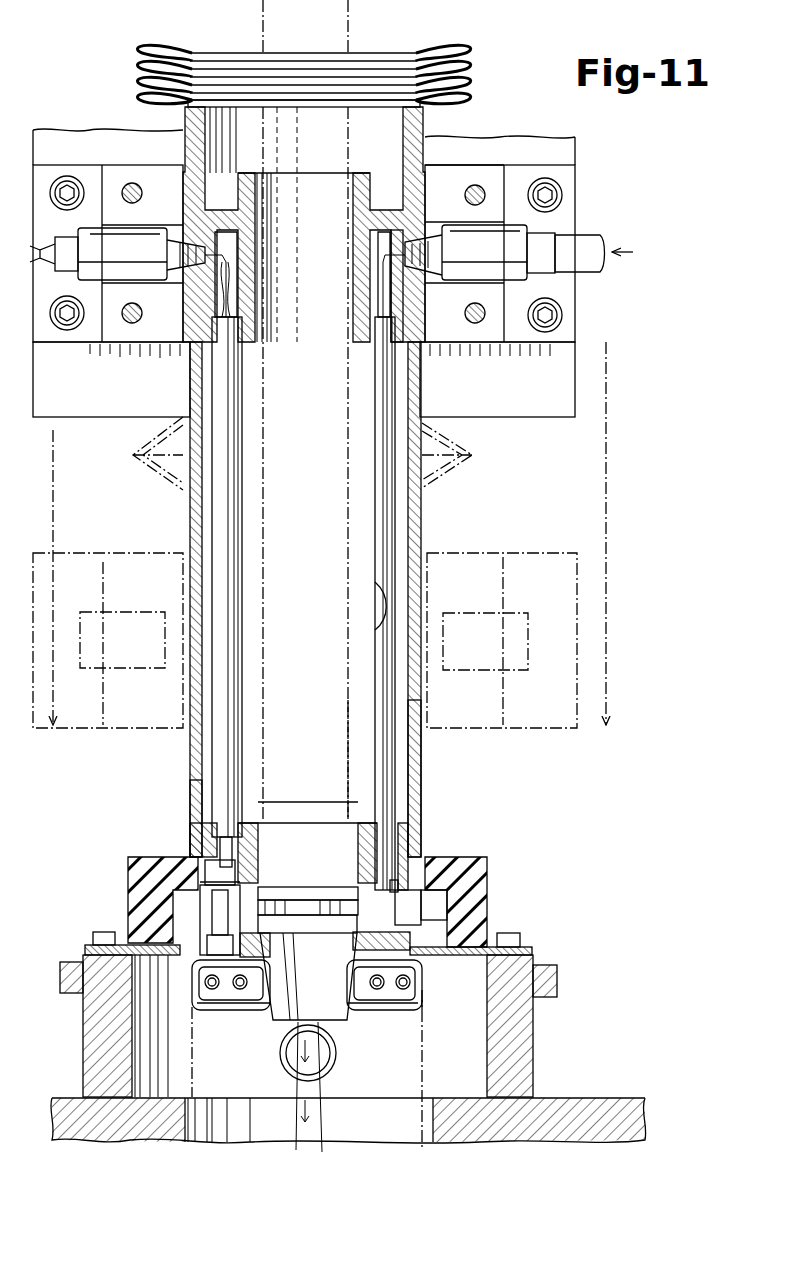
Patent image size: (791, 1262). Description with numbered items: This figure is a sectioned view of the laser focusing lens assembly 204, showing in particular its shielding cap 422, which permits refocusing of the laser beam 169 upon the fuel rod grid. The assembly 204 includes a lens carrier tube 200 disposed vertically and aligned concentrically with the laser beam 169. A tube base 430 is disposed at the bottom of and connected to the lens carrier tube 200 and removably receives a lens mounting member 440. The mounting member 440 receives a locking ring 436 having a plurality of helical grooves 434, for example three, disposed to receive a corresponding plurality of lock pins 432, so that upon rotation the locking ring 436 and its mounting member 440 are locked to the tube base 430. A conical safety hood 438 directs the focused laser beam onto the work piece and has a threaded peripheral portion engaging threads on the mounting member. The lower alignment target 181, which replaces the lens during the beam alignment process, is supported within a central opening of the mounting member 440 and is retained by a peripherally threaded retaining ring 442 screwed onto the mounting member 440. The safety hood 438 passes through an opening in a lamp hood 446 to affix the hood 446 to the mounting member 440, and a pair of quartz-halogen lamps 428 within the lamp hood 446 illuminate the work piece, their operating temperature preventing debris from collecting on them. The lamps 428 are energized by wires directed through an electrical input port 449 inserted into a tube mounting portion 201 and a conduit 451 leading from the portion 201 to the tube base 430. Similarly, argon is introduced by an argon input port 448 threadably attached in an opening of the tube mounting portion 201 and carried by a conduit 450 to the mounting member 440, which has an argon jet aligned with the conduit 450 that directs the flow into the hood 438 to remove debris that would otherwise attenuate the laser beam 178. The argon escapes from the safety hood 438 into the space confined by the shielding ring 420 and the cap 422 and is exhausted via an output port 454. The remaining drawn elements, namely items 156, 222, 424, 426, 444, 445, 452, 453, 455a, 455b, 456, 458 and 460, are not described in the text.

The base plate 156 is at (550, 1105).
The laser beam 169 is at (265, 650).
The laser beam 178 is at (352, 780).
The lower alignment target 181 is at (287, 910).
The lens carrier tube 200 is at (417, 511).
The tube mounting portion 201 is at (417, 318).
The laser focusing lens assembly 204 is at (425, 748).
The mounting block 222 is at (577, 182).
The shielding ring 420 is at (487, 860).
The shielding cap 422 is at (128, 916).
The retainer 424 is at (410, 848).
The base opening 426 is at (427, 1103).
The quartz-halogen lamps 428 is at (415, 1005).
The tube base 430 is at (200, 832).
The lock pins 432 is at (405, 843).
The helical grooves 434 is at (457, 882).
The locking ring 436 is at (412, 925).
The safety hood 438 is at (267, 1020).
The lens mounting member 440 is at (402, 945).
The retaining ring 442 is at (268, 840).
The bracket base 444 is at (380, 1010).
The washer 445 is at (430, 905).
The lamp hood 446 is at (423, 988).
The argon input port 448 is at (515, 232).
The electrical input port 449 is at (95, 228).
The conduit 450 is at (378, 515).
The conduit 451 is at (233, 442).
The nozzle cone 452 is at (322, 932).
The ring 453 is at (353, 897).
The output port 454 is at (293, 1065).
The sensor tip 455a is at (213, 880).
The sensor tip 455b is at (222, 882).
The coil spring 456 is at (450, 47).
The lower mounting block 458 is at (557, 373).
The housing shoulder 460 is at (455, 172).